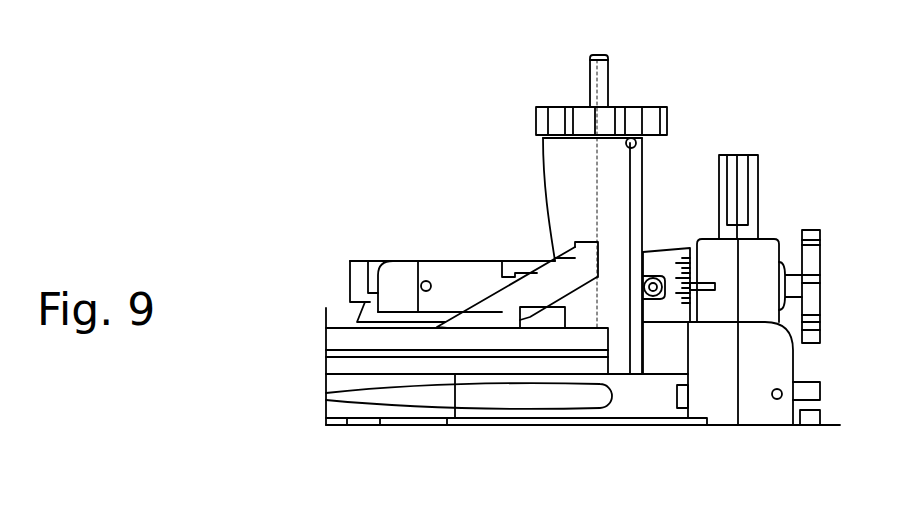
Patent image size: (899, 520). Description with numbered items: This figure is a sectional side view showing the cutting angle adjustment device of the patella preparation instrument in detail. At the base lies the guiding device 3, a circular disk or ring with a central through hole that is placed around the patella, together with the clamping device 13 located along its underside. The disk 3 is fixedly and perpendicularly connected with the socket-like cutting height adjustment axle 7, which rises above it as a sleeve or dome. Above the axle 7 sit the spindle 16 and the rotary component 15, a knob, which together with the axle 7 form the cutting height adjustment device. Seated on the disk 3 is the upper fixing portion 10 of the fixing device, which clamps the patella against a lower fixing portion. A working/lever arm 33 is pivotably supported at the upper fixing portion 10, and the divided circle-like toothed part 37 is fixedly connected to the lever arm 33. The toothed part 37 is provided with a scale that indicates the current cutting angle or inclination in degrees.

The guiding device 3 is at (318, 348).
The cutting height adjustment axle 7 is at (536, 158).
The upper fixing portion 10 is at (449, 252).
The clamping device 13 is at (343, 433).
The rotary component 15 is at (677, 110).
The spindle 16 is at (617, 69).
The working/lever arm 33 is at (350, 286).
The toothed part 37 is at (680, 240).